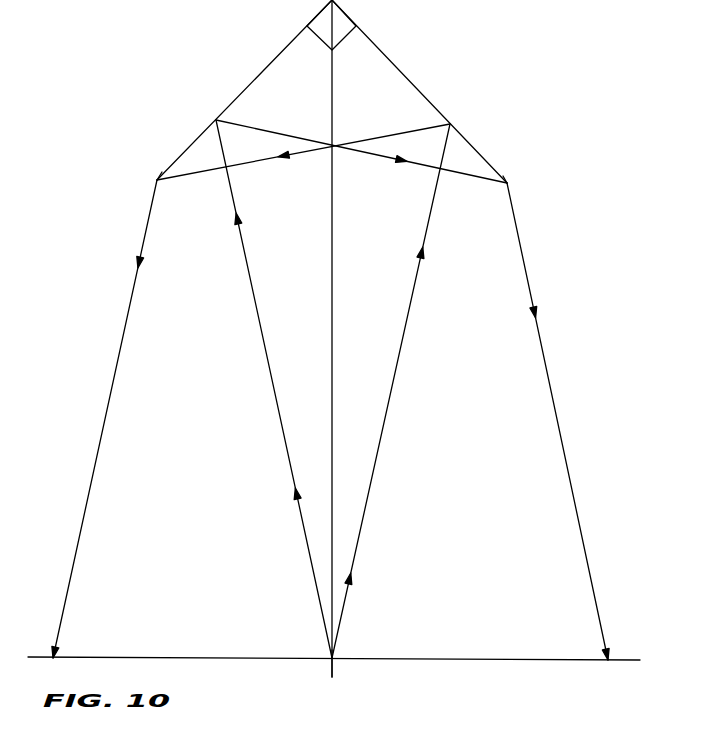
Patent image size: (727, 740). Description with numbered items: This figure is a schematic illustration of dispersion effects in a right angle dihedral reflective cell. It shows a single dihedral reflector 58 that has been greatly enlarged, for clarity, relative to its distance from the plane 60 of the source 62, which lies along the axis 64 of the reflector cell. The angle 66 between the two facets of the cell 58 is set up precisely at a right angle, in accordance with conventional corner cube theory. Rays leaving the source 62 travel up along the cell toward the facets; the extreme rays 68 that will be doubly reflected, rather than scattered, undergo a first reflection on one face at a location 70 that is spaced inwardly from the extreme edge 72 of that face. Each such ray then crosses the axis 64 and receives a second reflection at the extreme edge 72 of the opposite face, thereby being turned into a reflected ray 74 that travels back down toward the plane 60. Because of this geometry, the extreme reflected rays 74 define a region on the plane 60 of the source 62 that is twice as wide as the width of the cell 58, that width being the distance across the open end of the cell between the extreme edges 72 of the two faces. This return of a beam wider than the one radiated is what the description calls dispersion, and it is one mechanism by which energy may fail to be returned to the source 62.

The dihedral reflector 58 is at (437, 95).
The plane 60 is at (510, 660).
The source 62 is at (333, 661).
The axis 64 is at (332, 432).
The angle 66 is at (343, 25).
The extreme rays 68 is at (280, 420).
The location 70 is at (217, 118).
The extreme edge 72 is at (156, 182).
The reflected ray 74 is at (105, 413).